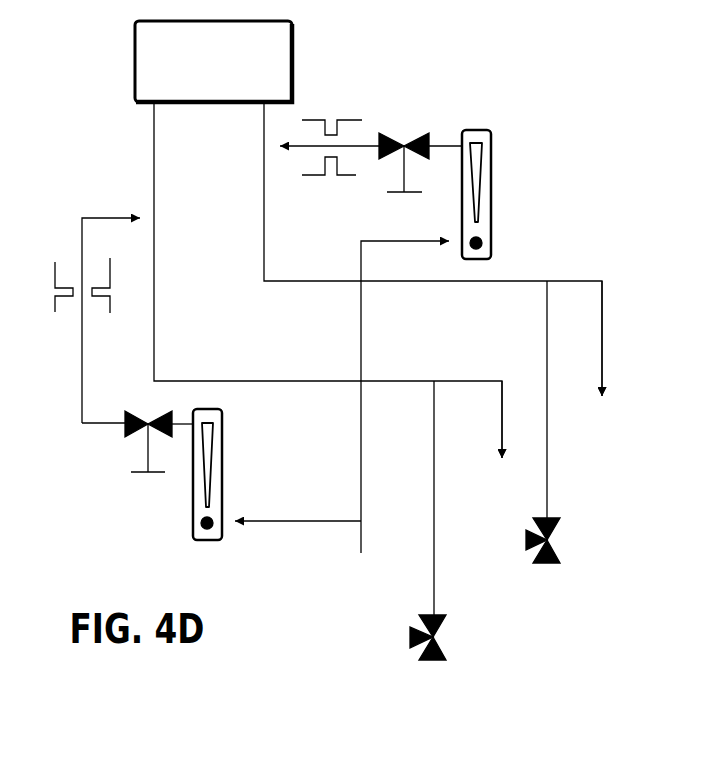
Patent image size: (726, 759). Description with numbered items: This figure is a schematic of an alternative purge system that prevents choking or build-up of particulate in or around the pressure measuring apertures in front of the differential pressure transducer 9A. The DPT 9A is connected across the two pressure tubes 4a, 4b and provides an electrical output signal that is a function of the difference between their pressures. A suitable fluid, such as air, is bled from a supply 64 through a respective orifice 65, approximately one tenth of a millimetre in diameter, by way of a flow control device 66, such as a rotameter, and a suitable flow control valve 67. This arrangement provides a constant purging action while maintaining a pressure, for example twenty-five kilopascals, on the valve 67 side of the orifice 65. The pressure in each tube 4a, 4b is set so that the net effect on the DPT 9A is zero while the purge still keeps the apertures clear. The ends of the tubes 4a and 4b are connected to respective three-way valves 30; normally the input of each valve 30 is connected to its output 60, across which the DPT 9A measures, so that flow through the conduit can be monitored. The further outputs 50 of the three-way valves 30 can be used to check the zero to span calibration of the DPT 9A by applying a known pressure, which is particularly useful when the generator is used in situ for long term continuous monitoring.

The differential pressure transducer 9A is at (300, 54).
The orifice 65 is at (345, 110).
The flow control valve 67 is at (413, 130).
The flow control device 66 is at (499, 201).
The supply 64 is at (342, 413).
The tube 4a is at (502, 442).
The tube 4b is at (582, 368).
The 3-way valve 30 is at (511, 586).
The output of 3-way valve 50 is at (458, 589).
The output of 3-way valve 60 is at (489, 620).